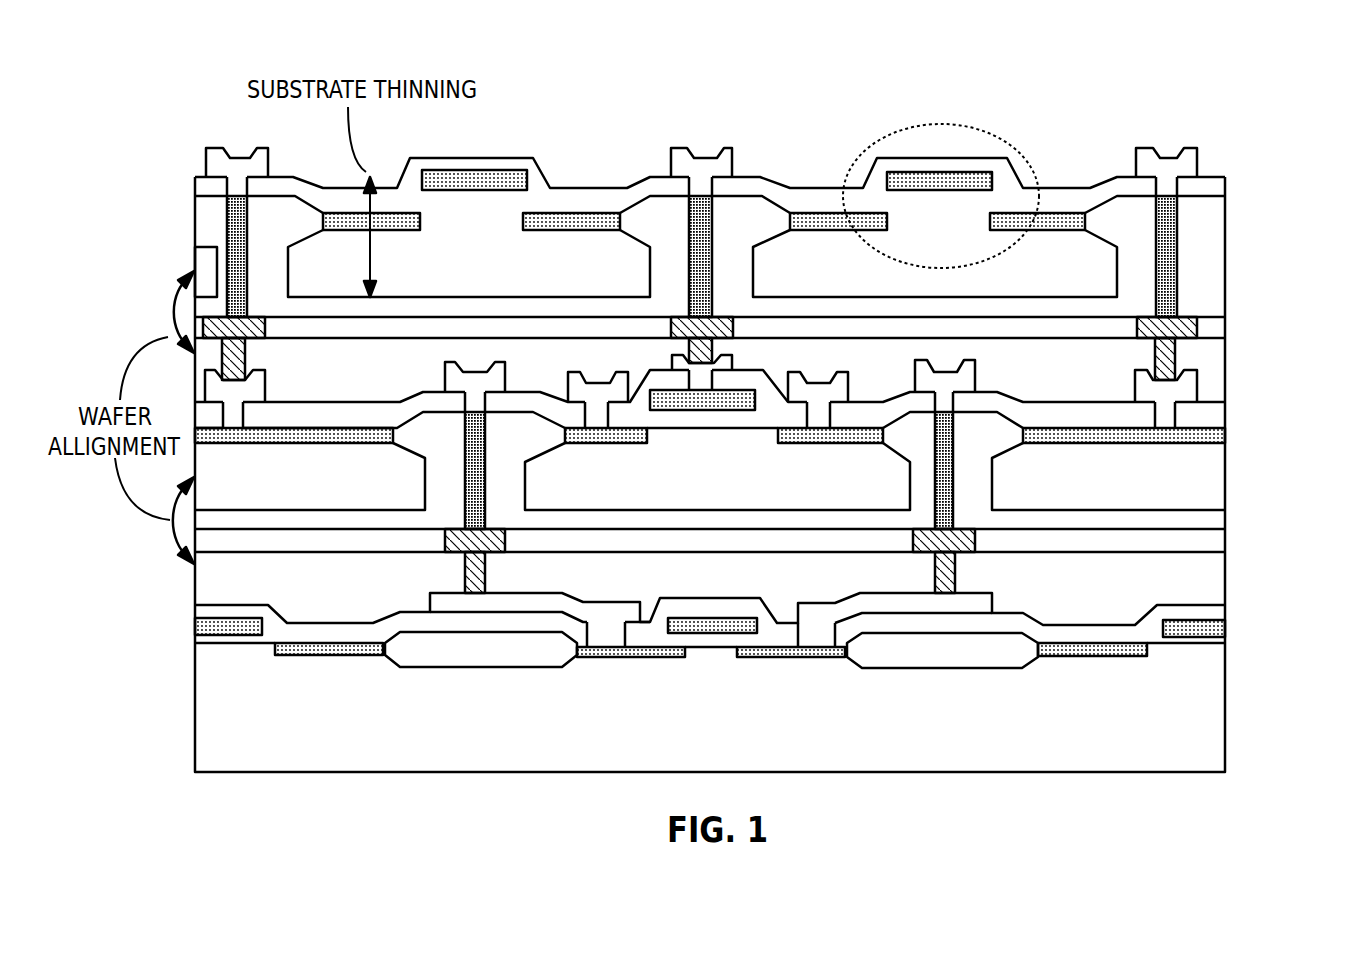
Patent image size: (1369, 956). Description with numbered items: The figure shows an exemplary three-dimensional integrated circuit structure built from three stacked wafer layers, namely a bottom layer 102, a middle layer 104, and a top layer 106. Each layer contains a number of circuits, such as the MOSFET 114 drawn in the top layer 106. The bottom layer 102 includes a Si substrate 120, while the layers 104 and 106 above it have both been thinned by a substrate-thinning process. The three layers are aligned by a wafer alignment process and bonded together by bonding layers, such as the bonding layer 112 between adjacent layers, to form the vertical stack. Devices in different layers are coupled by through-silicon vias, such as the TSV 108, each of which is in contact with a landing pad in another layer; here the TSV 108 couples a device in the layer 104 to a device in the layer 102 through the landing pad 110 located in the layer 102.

The layer 102 is at (1230, 772).
The layer 104 is at (1230, 527).
The layer 106 is at (1230, 317).
The TSV 108 is at (935, 496).
The landing pad 110 is at (967, 553).
The bonding layer 112 is at (992, 335).
The MOSFET 114 is at (993, 138).
The Si substrate 120 is at (710, 662).